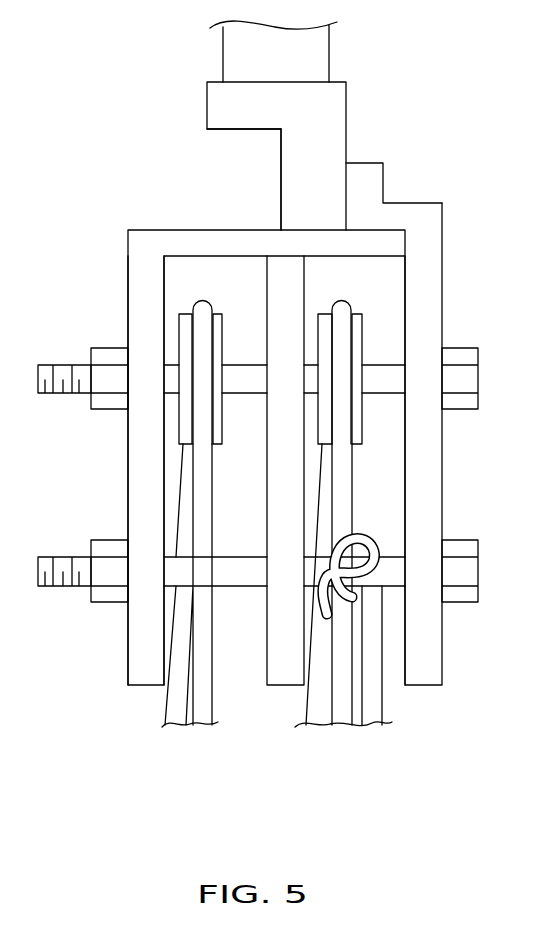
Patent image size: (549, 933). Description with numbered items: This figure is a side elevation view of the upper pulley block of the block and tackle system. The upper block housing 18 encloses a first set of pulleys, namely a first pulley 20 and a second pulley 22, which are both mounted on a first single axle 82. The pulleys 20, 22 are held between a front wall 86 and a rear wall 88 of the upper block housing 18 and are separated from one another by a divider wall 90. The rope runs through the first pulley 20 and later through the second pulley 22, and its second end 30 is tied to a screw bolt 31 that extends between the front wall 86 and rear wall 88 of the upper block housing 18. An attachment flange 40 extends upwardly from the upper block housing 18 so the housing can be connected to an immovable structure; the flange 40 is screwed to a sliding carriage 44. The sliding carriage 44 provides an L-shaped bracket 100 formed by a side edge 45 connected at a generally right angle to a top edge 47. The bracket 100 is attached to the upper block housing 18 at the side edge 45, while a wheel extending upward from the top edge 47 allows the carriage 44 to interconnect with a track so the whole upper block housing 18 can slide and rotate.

The upper block housing 18 is at (119, 223).
The first pulley 20 is at (372, 437).
The second pulley 22 is at (166, 433).
The second end 30 is at (357, 590).
The screw bolt 31 is at (443, 568).
The attachment flange 40 is at (368, 180).
The sliding carriage 44 is at (328, 116).
The side edge 45 is at (297, 178).
The top edge 47 is at (215, 96).
The first single axle 82 is at (377, 375).
The front wall 86 is at (422, 675).
The rear wall 88 is at (140, 657).
The divider wall 90 is at (271, 680).
The L-shaped bracket 100 is at (224, 131).